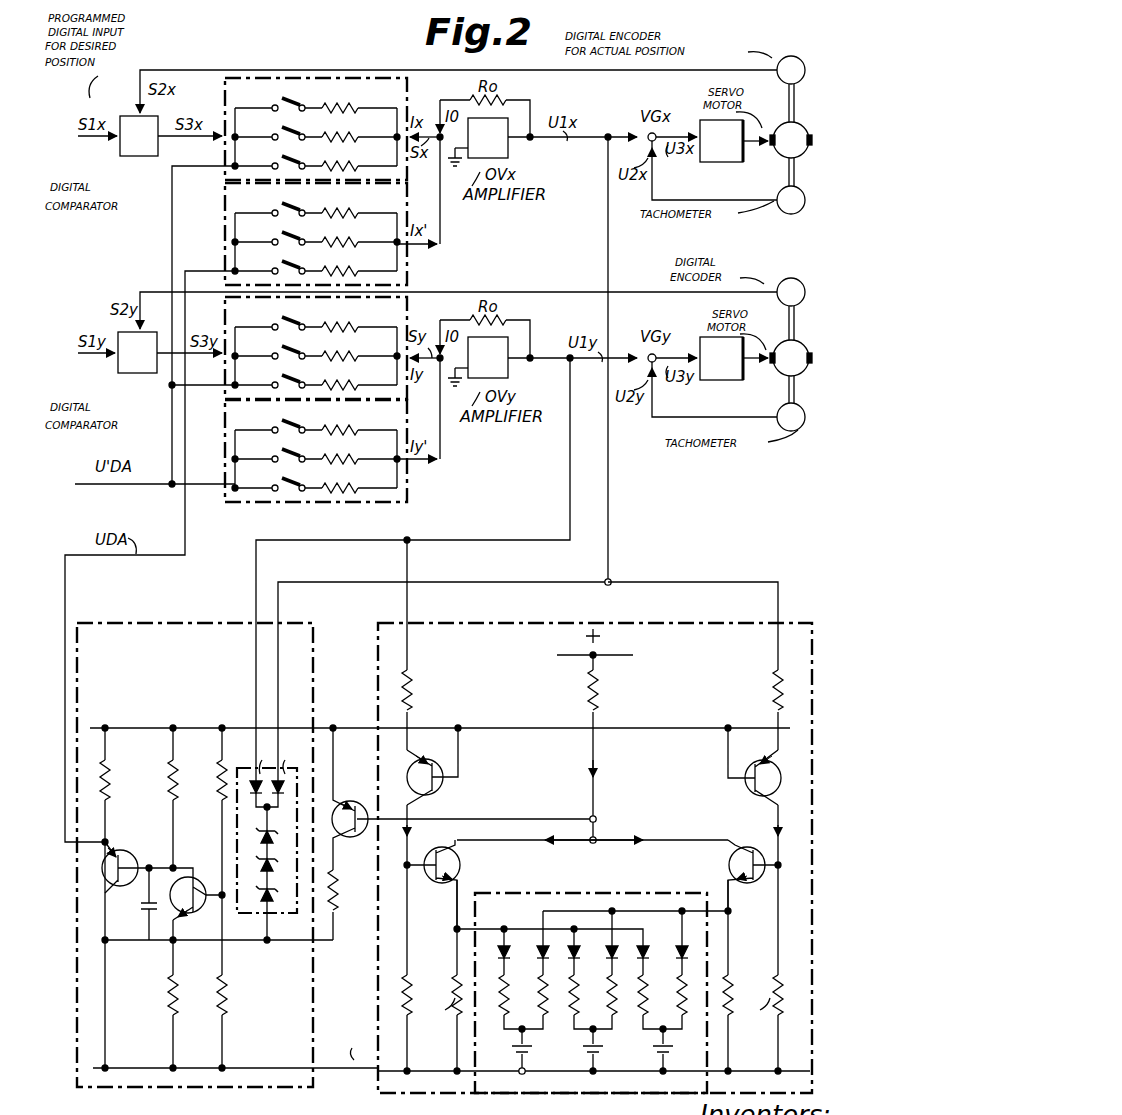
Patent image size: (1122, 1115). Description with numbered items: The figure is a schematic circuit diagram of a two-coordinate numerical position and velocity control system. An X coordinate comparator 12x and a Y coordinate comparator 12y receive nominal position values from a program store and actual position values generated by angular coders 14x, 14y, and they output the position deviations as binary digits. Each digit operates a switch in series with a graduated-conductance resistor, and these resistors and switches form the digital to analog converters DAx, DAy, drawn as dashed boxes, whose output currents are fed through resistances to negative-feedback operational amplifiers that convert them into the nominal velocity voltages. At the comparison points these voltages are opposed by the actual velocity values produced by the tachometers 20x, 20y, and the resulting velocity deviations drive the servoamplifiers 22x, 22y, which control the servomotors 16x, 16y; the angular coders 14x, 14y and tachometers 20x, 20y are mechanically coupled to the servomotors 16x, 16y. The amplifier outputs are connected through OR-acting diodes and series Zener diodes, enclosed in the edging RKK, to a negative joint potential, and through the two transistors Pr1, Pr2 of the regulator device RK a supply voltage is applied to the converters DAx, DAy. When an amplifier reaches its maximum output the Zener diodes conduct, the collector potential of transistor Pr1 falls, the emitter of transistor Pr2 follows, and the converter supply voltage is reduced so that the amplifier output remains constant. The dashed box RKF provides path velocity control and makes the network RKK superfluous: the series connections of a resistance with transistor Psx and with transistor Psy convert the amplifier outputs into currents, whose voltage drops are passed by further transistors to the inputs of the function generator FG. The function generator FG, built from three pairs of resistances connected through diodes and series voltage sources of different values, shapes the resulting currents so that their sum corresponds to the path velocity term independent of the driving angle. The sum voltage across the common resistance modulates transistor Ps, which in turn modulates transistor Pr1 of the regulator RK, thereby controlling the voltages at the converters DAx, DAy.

The X coordinate comparator 12x is at (136, 154).
The Y coordinate comparator 12y is at (136, 372).
The angular coder 14x is at (793, 66).
The angular coder 14y is at (793, 288).
The servomotor 16x is at (800, 130).
The servomotor 16y is at (800, 348).
The tachometer 20x is at (794, 196).
The tachometer 20y is at (794, 413).
The servoamplifier 22x is at (724, 152).
The servoamplifier 22y is at (724, 370).
The digital to analog converter DAx is at (238, 78).
The digital to analog converter DAy is at (226, 322).
The regulator device RK is at (182, 622).
The path velocity control circuit RKF is at (682, 624).
The diode and Zener diode series connection RKK is at (240, 744).
The function generator FG is at (614, 894).
The transistor Ps is at (368, 800).
The transistor Psy is at (410, 780).
The transistor Psx is at (752, 802).
The transistor Pr1 is at (200, 878).
The transistor Pr2 is at (127, 858).